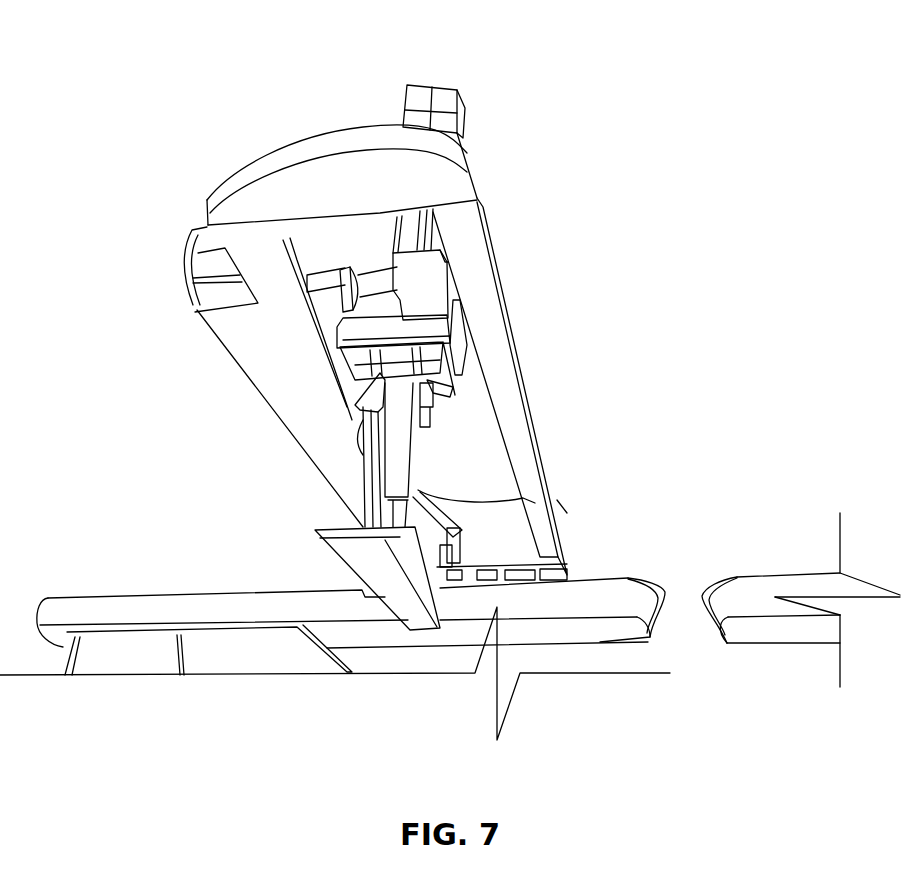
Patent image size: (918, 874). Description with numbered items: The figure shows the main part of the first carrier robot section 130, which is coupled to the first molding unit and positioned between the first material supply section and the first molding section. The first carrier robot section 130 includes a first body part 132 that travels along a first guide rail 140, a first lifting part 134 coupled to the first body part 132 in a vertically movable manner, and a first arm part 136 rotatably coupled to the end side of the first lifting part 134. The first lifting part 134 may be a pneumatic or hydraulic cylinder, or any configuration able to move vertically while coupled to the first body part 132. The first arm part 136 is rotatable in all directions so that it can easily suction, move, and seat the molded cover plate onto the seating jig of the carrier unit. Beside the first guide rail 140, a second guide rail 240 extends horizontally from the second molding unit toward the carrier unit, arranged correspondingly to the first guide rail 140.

The first carrier robot section 130 is at (420, 302).
The first body part 132 is at (305, 183).
The first lifting part 134 is at (442, 120).
The first arm part 136 is at (413, 617).
The first guide rail 140 is at (105, 620).
The second guide rail 240 is at (778, 627).